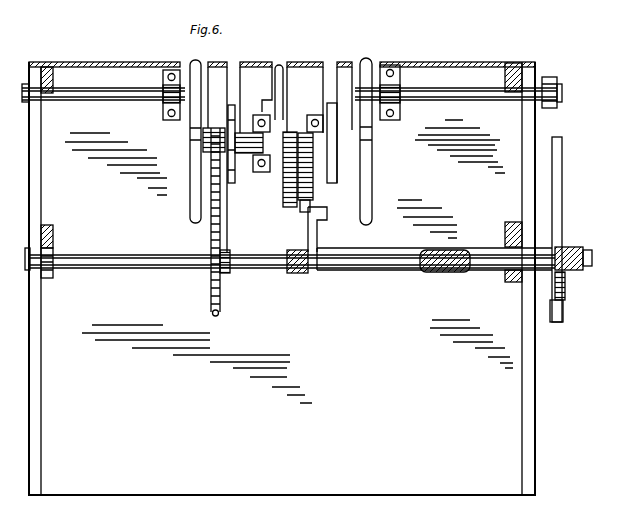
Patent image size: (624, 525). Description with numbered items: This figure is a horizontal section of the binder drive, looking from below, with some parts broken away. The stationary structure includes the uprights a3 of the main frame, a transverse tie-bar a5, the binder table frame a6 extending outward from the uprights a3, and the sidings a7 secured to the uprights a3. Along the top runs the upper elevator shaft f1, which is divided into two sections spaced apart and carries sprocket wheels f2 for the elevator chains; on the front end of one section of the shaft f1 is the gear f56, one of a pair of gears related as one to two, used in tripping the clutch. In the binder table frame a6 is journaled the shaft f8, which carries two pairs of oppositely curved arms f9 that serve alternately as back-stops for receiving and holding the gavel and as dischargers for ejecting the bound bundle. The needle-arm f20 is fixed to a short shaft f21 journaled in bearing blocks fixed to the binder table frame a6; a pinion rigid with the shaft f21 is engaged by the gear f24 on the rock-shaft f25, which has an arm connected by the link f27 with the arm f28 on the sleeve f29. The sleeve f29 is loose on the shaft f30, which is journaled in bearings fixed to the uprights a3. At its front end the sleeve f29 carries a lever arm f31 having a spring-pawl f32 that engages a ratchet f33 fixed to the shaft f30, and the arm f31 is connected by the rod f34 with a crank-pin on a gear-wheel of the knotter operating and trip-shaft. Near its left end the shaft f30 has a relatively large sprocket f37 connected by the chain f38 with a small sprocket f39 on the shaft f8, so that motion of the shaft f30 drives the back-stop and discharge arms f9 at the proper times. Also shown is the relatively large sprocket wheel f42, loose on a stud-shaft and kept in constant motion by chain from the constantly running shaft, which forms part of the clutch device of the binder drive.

The uprights a3 is at (53, 80).
The transverse tie-bar a5 is at (123, 42).
The binder table frame a6 is at (35, 383).
The sidings a7 is at (533, 148).
The upper elevator shaft f1 is at (135, 96).
The sprocket wheels f2 is at (192, 120).
The shaft f8 is at (262, 153).
The arms f9 is at (233, 112).
The needle-arm f20 is at (279, 130).
The short shaft f21 is at (306, 152).
The gear f24 is at (313, 186).
The rock-shaft f25 is at (270, 180).
The link f27 is at (320, 206).
The arm f28 is at (295, 130).
The sleeve f29 is at (382, 270).
The shaft f30 is at (138, 265).
The lever arm f31 is at (563, 311).
The spring-pawl f32 is at (573, 286).
The ratchet f33 is at (563, 247).
The rod f34 is at (562, 210).
The large sprocket f37 is at (217, 315).
The chain f38 is at (211, 165).
The small sprocket f39 is at (213, 128).
The large sprocket wheel f42 is at (282, 212).
The gear f56 is at (550, 77).